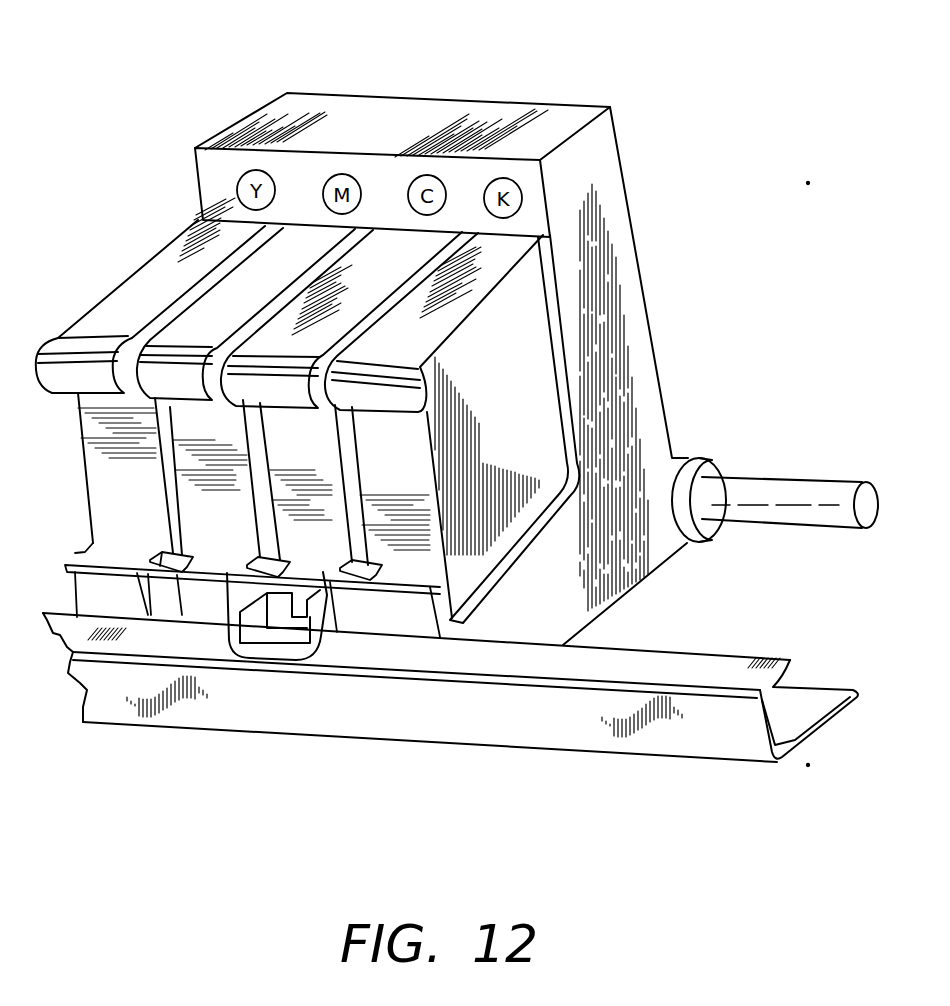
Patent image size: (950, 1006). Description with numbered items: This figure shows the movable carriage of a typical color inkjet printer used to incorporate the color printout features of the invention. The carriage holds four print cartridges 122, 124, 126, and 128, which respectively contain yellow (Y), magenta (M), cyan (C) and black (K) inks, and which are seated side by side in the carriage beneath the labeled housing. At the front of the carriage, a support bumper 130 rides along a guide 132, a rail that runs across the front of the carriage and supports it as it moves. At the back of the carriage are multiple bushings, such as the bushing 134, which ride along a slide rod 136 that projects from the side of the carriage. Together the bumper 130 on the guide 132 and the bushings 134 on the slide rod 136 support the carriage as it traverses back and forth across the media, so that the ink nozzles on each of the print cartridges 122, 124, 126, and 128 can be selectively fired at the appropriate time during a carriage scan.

The print cartridge 122 is at (153, 297).
The print cartridge 124 is at (300, 247).
The print cartridge 126 is at (397, 247).
The print cartridge 128 is at (508, 267).
The support bumper 130 is at (277, 637).
The guide 132 is at (392, 650).
The bushing 134 is at (690, 467).
The slide rod 136 is at (807, 490).